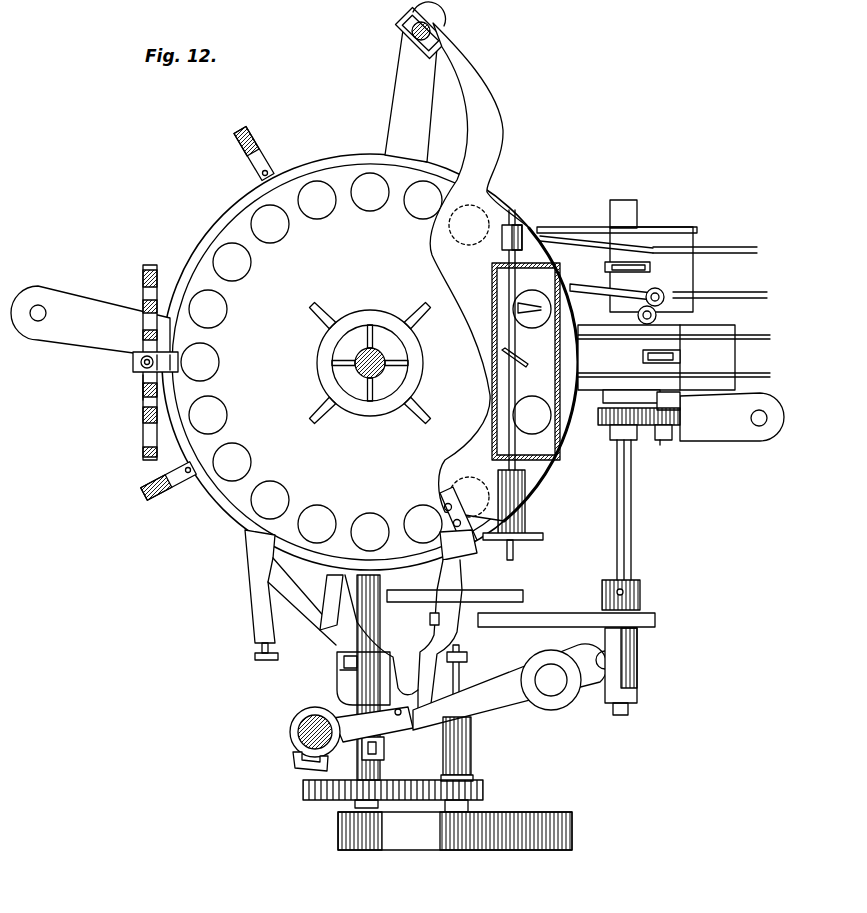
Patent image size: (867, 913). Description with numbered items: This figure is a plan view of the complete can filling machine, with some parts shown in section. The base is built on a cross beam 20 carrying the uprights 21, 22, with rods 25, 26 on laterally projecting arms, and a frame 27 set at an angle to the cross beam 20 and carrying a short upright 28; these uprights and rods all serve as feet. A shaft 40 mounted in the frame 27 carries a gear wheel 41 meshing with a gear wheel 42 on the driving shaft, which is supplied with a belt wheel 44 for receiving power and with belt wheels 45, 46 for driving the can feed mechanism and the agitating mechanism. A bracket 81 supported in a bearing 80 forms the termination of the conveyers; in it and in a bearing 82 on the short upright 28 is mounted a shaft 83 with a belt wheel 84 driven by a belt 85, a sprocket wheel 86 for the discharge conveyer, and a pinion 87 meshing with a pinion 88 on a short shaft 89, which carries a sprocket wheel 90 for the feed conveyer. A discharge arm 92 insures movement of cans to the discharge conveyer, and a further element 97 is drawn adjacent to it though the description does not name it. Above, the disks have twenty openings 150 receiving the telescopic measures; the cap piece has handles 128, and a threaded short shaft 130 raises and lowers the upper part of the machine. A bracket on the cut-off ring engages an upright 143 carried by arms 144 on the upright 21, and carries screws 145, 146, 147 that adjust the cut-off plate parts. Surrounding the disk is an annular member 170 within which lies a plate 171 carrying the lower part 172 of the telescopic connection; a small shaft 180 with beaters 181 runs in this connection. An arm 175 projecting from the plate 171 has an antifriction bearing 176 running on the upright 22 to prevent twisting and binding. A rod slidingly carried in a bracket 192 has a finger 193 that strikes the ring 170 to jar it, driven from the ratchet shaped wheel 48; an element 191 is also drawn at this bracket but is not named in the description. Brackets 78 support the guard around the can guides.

The cross beam 20 is at (411, 96).
The upright 22 is at (407, 30).
The antifriction bearing 176 is at (432, 14).
The arm 175 is at (488, 113).
The annular member 170 is at (550, 455).
The lower part of telescopic connection 172 is at (493, 386).
The short shaft 130 is at (384, 361).
The handles 128 is at (370, 385).
The openings 150 is at (351, 530).
The beaters or paddles 181 is at (537, 315).
The small shaft 180 is at (532, 415).
The plate 171 is at (464, 382).
The rod 25 is at (36, 322).
The bracket 192 is at (135, 363).
The pin 191 is at (147, 366).
The finger 193 is at (146, 400).
The ratchet shaped wheel 48 is at (146, 420).
The brackets 78 is at (160, 495).
The discharge arm 92 is at (578, 287).
The sprocket wheel 86 is at (648, 269).
The roller 97 is at (658, 315).
The sprocket wheel 90 is at (681, 358).
The bracket 81 is at (678, 401).
The pinion 87 is at (610, 421).
The bearing 80 is at (636, 426).
The pinion 88 is at (672, 431).
The short shaft 89 is at (664, 441).
The shaft 83 is at (626, 497).
The belt 85 is at (573, 614).
The belt wheel 84 is at (643, 618).
The bearing 82 is at (632, 661).
The rod 26 is at (758, 424).
The frame 27 is at (513, 687).
The short upright 28 is at (552, 684).
The screw 147 is at (468, 657).
The belt wheel 46 is at (412, 596).
The belt wheel 45 is at (436, 620).
The screw 146 is at (290, 608).
The screw 145 is at (348, 673).
The upright 21 is at (300, 733).
The arms 144 is at (318, 766).
The upright 143 is at (406, 716).
The gear wheel 42 is at (475, 790).
The gear wheel 41 is at (312, 794).
The shaft 40 is at (358, 804).
The belt wheel 44 is at (455, 831).